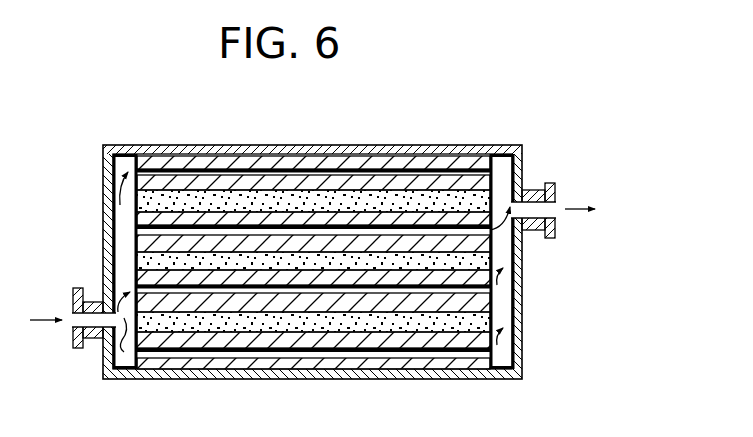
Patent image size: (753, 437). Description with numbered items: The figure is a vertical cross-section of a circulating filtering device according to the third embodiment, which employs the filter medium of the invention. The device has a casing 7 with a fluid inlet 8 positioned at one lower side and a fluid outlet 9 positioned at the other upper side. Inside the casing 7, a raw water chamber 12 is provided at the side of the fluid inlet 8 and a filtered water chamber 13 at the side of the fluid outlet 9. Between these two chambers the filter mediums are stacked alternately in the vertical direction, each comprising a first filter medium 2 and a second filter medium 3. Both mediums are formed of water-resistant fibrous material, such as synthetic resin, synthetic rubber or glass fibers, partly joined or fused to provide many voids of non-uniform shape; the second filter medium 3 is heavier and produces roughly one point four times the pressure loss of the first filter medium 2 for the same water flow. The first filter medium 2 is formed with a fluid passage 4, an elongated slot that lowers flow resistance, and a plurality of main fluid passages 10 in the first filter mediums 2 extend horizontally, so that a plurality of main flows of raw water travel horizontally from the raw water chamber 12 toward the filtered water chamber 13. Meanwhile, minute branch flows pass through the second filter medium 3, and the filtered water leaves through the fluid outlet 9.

The first filter medium 2 is at (349, 366).
The second filter medium 3 is at (250, 197).
The fluid passage 4 is at (147, 230).
The casing 7 is at (382, 150).
The fluid inlet 8 is at (92, 320).
The fluid outlet 9 is at (553, 214).
The main fluid passages 10 is at (438, 364).
The raw water chamber 12 is at (127, 358).
The filtered water chamber 13 is at (505, 347).